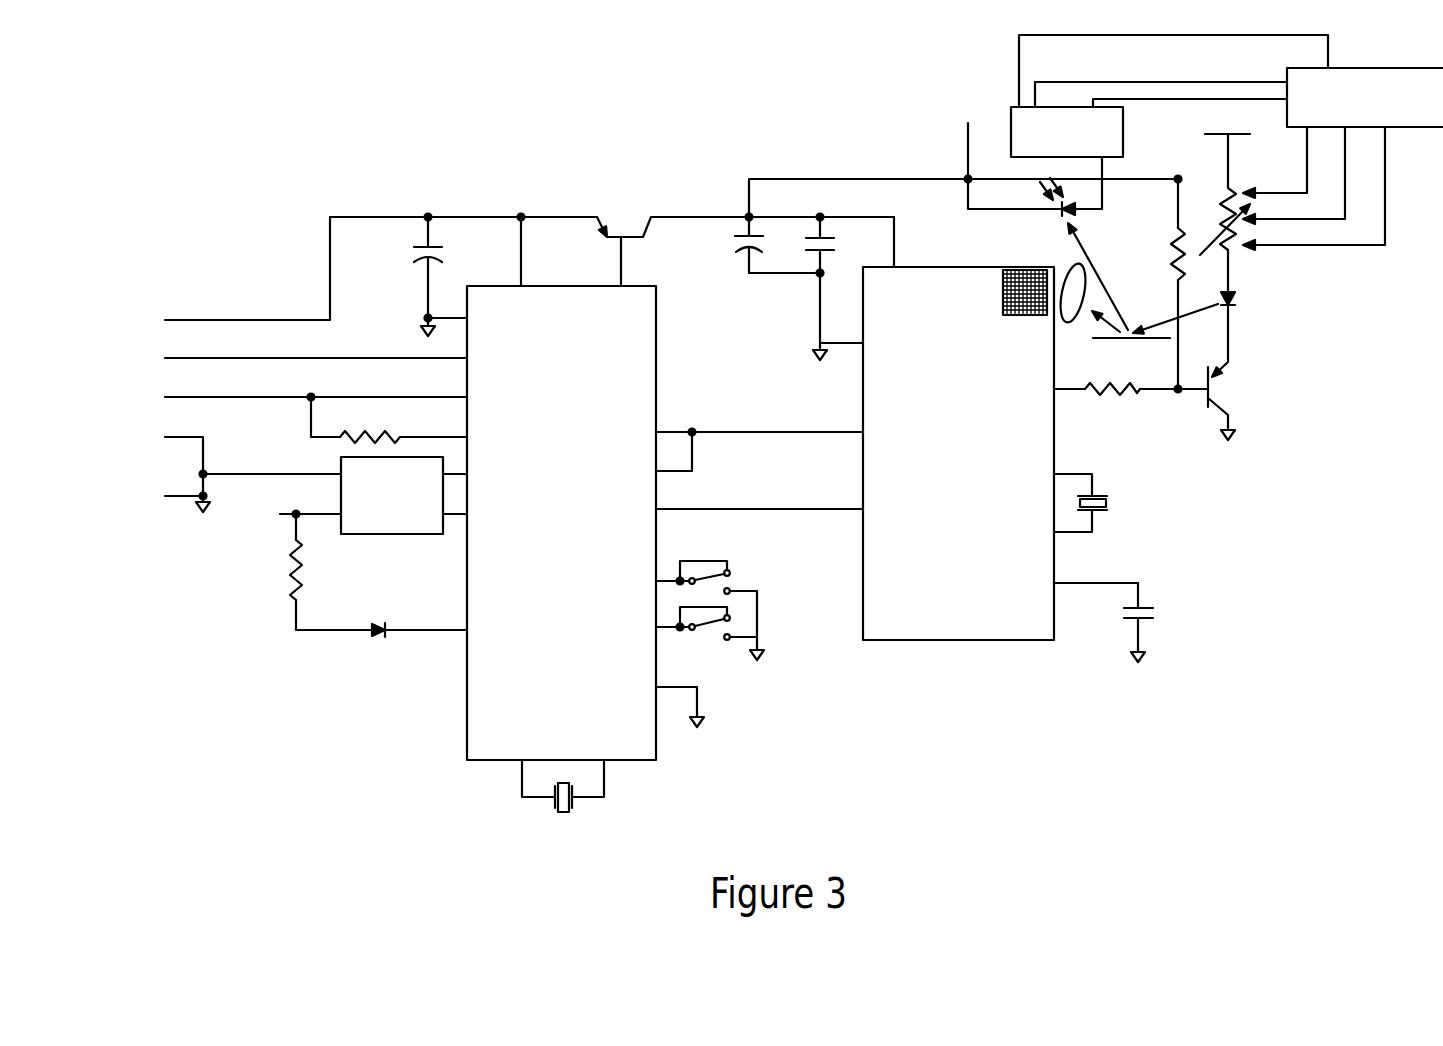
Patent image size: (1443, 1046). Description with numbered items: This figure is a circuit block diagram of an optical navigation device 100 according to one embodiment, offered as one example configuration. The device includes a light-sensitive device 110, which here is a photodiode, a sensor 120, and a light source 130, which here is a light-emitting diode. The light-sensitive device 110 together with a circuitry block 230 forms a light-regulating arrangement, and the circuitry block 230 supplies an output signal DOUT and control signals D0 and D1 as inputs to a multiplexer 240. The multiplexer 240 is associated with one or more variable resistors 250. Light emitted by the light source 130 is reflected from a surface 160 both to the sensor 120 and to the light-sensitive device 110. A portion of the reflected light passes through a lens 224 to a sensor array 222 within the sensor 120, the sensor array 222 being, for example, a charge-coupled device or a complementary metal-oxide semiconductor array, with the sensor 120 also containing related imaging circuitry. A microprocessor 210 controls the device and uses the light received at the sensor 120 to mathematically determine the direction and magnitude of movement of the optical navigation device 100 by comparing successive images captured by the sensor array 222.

The optical navigation device 100 is at (143, 208).
The light-sensitive device 110 is at (1034, 203).
The sensor 120 is at (945, 404).
The light source 130 is at (1237, 308).
The surface 160 is at (1143, 370).
The microprocessor 210 is at (589, 390).
The sensor array 222 is at (1011, 262).
The lens 224 is at (1072, 300).
The circuitry block 230 is at (1084, 147).
The multiplexer 240 is at (1437, 101).
The variable resistor 250 is at (1242, 256).